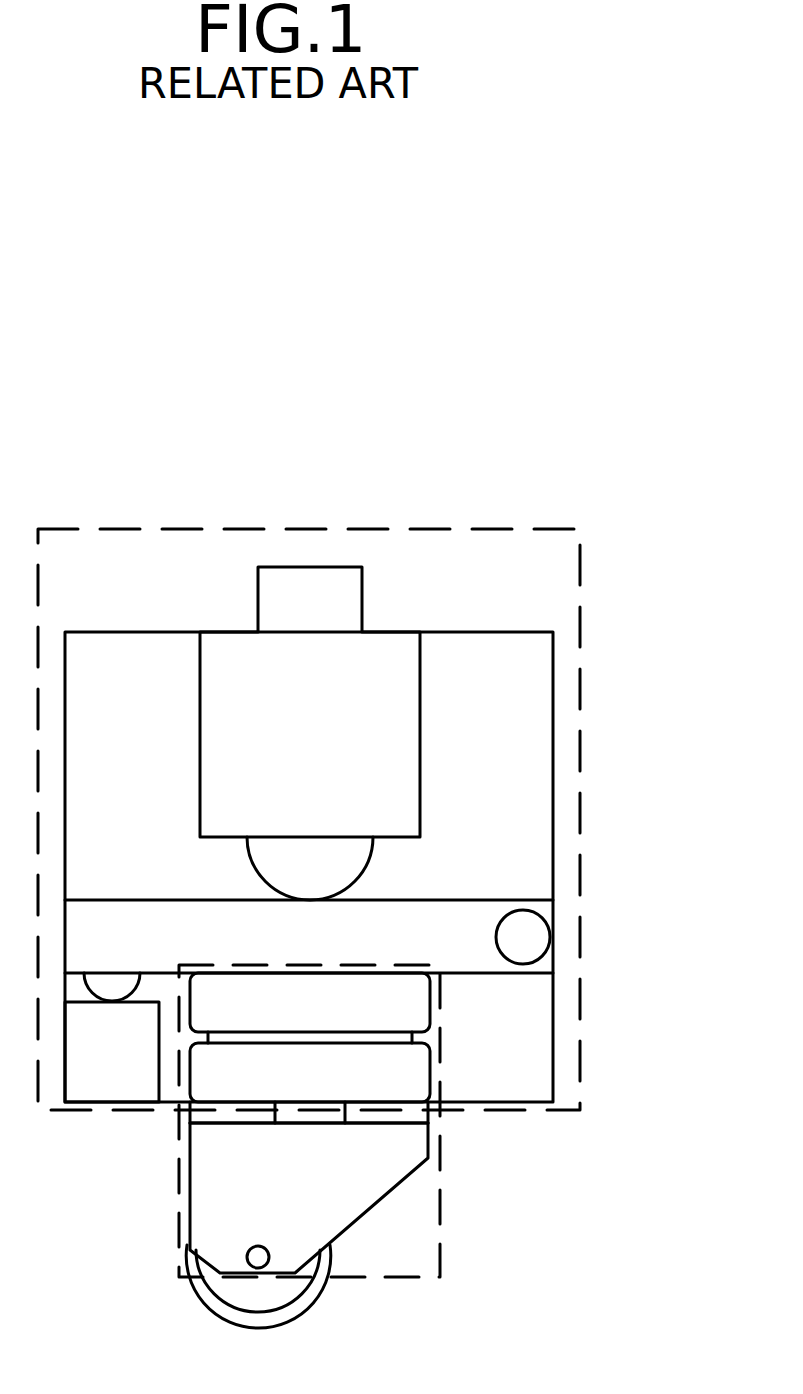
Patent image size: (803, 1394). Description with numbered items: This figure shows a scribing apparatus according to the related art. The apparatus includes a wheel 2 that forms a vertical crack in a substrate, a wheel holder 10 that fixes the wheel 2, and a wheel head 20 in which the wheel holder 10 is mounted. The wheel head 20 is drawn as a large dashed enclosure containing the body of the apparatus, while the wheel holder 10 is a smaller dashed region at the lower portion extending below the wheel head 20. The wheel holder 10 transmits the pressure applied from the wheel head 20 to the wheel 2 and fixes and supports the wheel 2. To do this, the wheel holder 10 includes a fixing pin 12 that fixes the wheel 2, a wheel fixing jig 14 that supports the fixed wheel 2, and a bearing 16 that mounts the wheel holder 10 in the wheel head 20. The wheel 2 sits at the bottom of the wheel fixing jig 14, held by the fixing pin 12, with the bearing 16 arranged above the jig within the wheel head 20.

The wheel 2 is at (243, 1287).
The wheel holder 10 is at (440, 1258).
The fixing pin 12 is at (247, 1257).
The wheel fixing jig 14 is at (430, 1138).
The bearing 16 is at (430, 1068).
The wheel head 20 is at (580, 617).